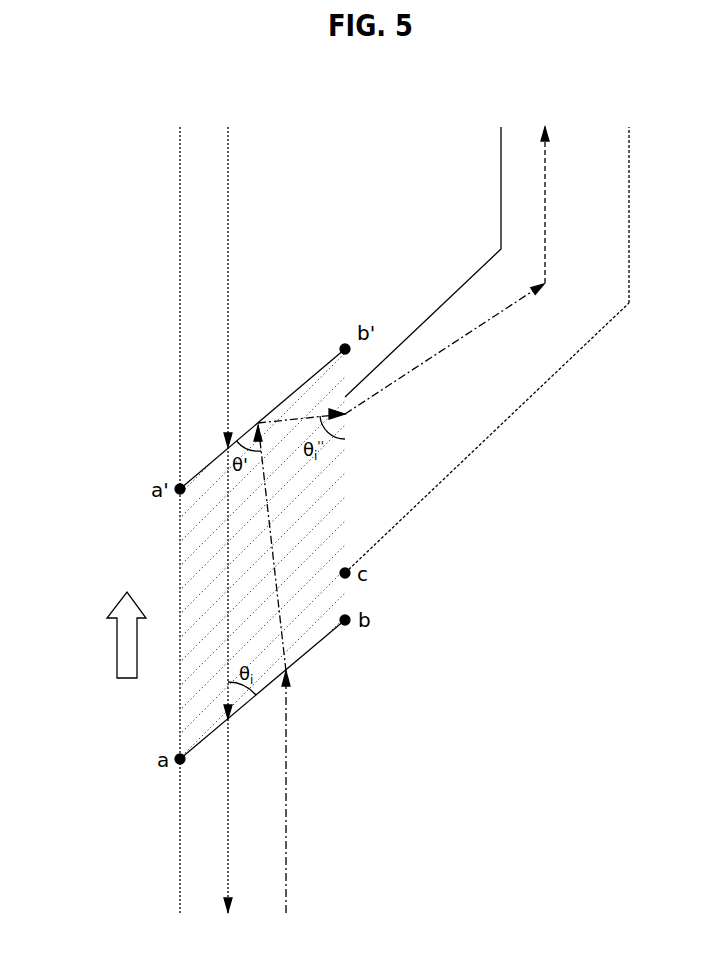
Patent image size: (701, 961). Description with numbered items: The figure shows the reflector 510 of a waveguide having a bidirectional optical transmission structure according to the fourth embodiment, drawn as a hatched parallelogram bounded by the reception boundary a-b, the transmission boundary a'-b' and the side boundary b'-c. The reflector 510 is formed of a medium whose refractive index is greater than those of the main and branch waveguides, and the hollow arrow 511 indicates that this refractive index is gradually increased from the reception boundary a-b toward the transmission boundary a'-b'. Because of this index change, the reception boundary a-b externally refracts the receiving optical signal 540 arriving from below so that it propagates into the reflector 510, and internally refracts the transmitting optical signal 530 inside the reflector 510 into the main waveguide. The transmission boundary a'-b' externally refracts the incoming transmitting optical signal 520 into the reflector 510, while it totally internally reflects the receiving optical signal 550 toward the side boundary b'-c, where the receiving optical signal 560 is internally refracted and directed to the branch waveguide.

The reflector 510 is at (192, 698).
The gradual increase of refractive index 511 is at (125, 650).
The transmitting optical signal 520 is at (228, 252).
The transmitting optical signal 530 is at (220, 570).
The receiving optical signal 540 is at (286, 813).
The receiving optical signal 550 is at (270, 550).
The receiving optical signal 560 is at (292, 419).